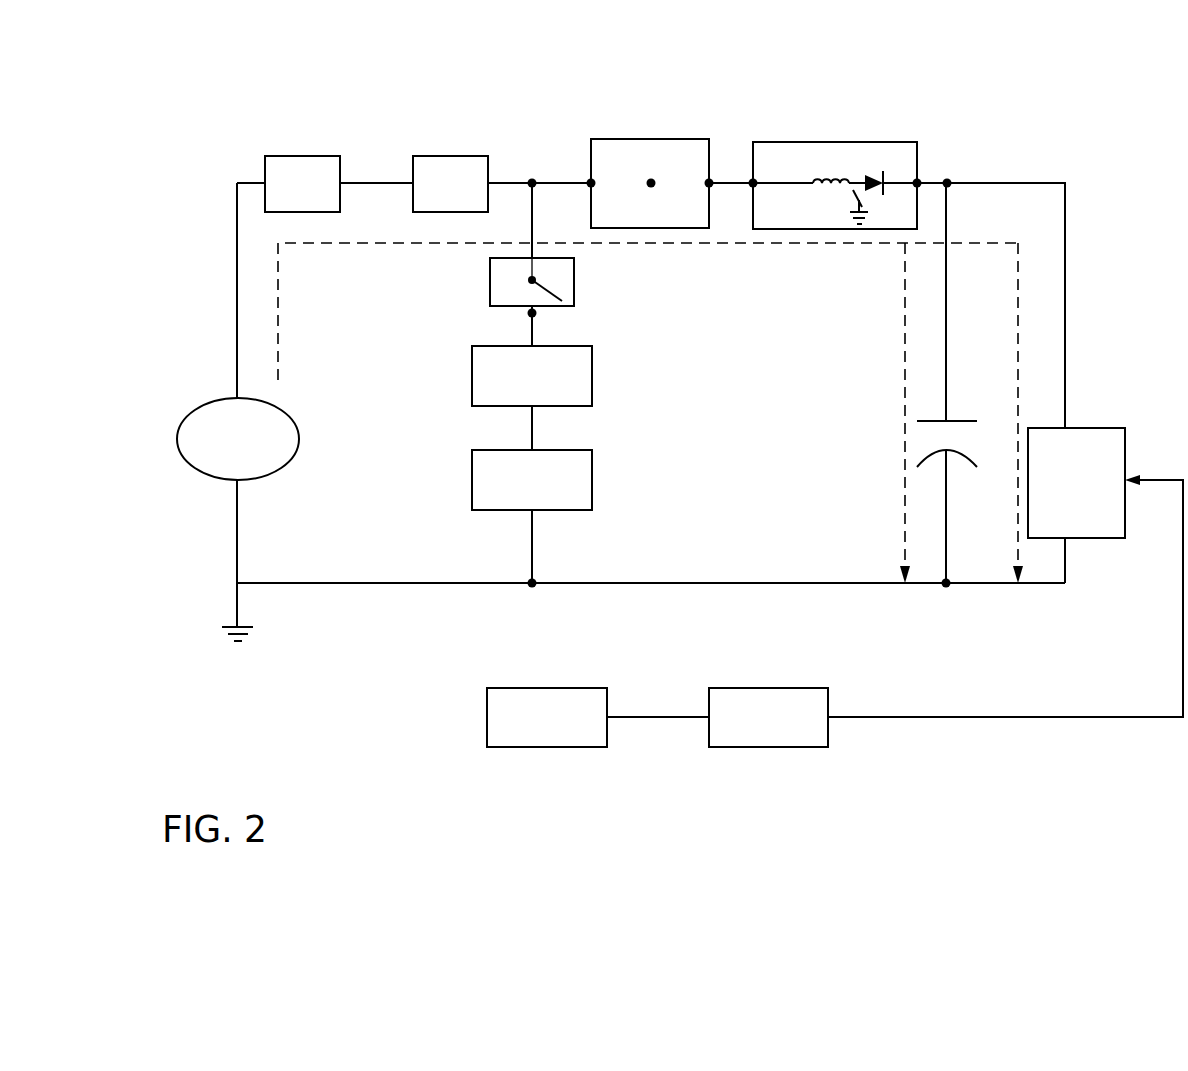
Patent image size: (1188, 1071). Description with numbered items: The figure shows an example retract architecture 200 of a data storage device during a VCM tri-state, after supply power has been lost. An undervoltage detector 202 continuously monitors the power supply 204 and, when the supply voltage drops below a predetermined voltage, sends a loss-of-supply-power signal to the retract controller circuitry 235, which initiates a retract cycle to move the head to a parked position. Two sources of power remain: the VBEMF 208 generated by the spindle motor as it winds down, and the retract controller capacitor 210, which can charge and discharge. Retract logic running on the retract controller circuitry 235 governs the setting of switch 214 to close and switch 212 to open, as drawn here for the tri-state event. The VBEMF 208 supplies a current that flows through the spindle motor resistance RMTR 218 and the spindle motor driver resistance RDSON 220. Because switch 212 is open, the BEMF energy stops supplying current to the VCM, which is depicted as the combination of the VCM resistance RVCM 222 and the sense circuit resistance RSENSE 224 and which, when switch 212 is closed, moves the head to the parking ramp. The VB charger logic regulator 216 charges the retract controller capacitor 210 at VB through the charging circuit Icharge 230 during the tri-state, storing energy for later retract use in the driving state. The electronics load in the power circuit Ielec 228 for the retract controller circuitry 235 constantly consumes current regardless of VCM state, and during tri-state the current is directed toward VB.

The retract architecture 200 is at (248, 102).
The undervoltage detector 202 is at (828, 702).
The power supply 204 is at (607, 688).
The VBEMF 208 is at (238, 439).
The retract controller capacitor 210 is at (925, 420).
The switch 212 is at (490, 297).
The switch 214 is at (650, 139).
The VB charger logic regulator 216 is at (836, 142).
The spindle motor resistance RMTR 218 is at (302, 184).
The spindle motor driver resistance RDSON 220 is at (450, 184).
The VCM resistance RVCM 222 is at (532, 376).
The sense circuit resistance RSENSE 224 is at (532, 480).
The Ielec power circuit 228 is at (995, 413).
The Icharge charging circuit 230 is at (875, 413).
The retract controller circuitry 235 is at (1076, 483).